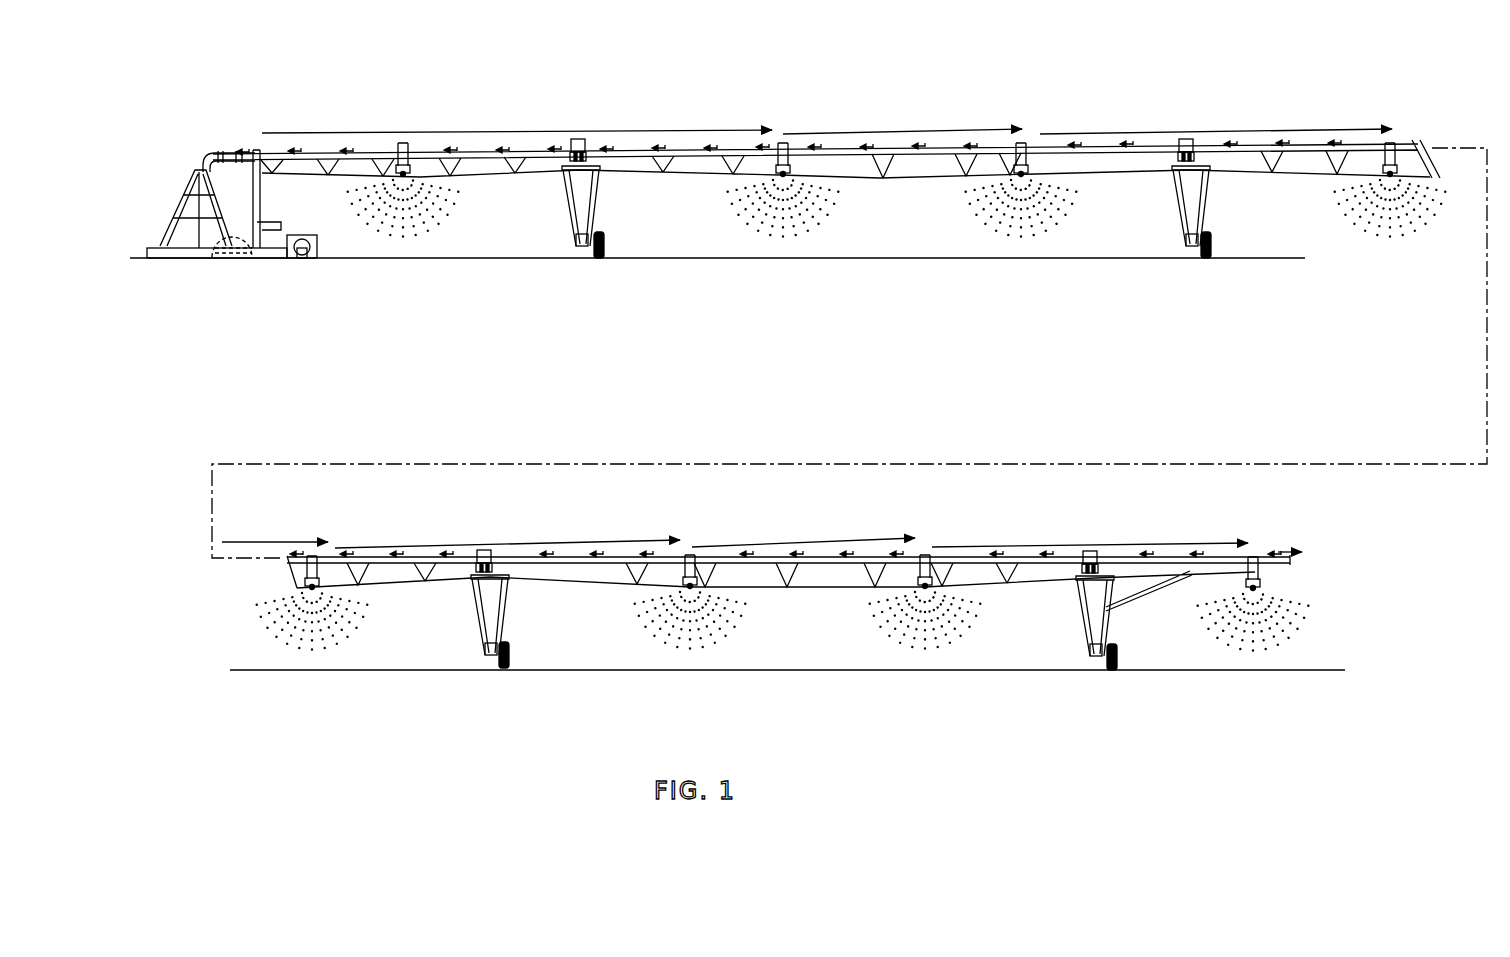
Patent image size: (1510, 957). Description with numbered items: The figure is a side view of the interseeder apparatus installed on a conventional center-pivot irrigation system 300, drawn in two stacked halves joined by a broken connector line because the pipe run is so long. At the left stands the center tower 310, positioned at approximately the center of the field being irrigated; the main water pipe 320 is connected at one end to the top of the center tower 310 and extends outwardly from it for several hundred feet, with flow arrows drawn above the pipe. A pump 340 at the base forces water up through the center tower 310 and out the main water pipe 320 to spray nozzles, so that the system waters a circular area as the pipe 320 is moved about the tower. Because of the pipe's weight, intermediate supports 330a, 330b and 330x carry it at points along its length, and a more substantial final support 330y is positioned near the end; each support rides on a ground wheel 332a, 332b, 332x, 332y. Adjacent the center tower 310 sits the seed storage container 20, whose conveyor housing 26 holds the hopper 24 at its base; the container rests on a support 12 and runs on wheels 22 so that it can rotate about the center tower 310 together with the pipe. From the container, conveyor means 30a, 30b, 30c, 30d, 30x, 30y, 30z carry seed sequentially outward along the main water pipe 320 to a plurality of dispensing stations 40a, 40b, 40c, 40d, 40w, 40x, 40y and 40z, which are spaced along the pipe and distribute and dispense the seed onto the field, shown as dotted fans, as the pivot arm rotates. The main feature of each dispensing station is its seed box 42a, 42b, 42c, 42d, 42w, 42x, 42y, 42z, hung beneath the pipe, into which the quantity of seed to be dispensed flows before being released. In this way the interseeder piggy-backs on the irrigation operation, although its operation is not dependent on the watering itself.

The center-pivot irrigation system 300 is at (181, 147).
The seed storage container 20 is at (239, 176).
The center tower 310 is at (181, 200).
The conveyor housing 26 is at (262, 170).
The support 12 is at (178, 262).
The wheels 22 is at (212, 262).
The hopper 24 is at (267, 237).
The pump 340 is at (316, 243).
The main water pipe 320 is at (662, 150).
The conveyor means 30a is at (364, 156).
The conveyor means 30b is at (495, 162).
The conveyor means 30c is at (915, 160).
The conveyor means 30d is at (1360, 155).
The conveyor means 30x is at (608, 568).
The conveyor means 30y is at (838, 565).
The conveyor means 30z is at (1224, 568).
The seed box 42a is at (413, 163).
The seed box 42b is at (792, 160).
The seed box 42c is at (1030, 160).
The seed box 42d is at (1400, 165).
The seed box 42w is at (312, 580).
The seed box 42x is at (703, 570).
The seed box 42y is at (940, 568).
The seed box 42z is at (1262, 583).
The dispensing station 40a is at (399, 208).
The dispensing station 40b is at (779, 214).
The dispensing station 40c is at (1014, 216).
The dispensing station 40d is at (1378, 211).
The dispensing station 40w is at (288, 611).
The dispensing station 40x is at (704, 624).
The dispensing station 40y is at (914, 623).
The dispensing station 40z is at (1264, 614).
The intermediate support 330a is at (564, 206).
The intermediate support 330b is at (1165, 207).
The intermediate support 330x is at (462, 624).
The final support 330y is at (1074, 618).
The wheel 332a is at (603, 246).
The wheel 332b is at (1215, 247).
The wheel 332x is at (503, 661).
The wheel 332y is at (1120, 653).